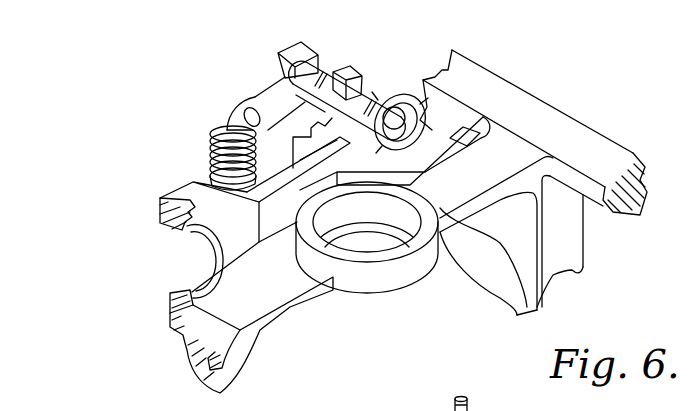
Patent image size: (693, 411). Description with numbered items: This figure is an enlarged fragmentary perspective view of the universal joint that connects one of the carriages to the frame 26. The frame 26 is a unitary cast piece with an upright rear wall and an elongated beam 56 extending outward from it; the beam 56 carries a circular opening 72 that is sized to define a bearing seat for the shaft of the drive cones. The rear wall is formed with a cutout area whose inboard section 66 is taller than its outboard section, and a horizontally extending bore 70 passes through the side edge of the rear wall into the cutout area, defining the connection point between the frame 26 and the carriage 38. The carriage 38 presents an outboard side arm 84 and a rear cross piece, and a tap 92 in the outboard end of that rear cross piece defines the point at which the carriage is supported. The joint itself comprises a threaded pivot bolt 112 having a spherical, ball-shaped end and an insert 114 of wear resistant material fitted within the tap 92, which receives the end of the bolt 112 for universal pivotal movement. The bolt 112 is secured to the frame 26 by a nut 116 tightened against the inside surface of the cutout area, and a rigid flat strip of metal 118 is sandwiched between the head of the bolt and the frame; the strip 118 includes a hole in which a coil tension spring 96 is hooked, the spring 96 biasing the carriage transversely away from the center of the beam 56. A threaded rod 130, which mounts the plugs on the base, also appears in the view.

The frame 26 is at (563, 105).
The carriage 38 is at (150, 188).
The beam 56 is at (223, 305).
The inboard section 66 is at (570, 240).
The bore 70 is at (279, 105).
The circular opening 72 is at (350, 222).
The outboard side arm 84 is at (160, 217).
The tap 92 is at (403, 103).
The coil tension spring 96 is at (220, 157).
The pivot bolt 112 is at (323, 97).
The insert 114 is at (433, 117).
The nut 116 is at (353, 78).
The flat strip of metal 118 is at (247, 108).
The threaded rod 130 is at (468, 406).